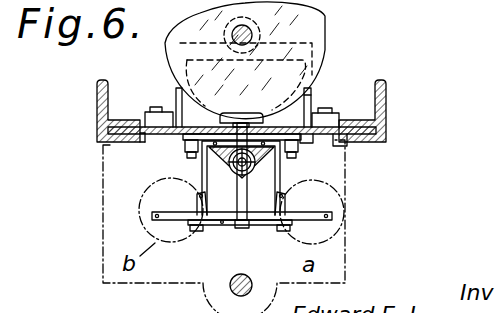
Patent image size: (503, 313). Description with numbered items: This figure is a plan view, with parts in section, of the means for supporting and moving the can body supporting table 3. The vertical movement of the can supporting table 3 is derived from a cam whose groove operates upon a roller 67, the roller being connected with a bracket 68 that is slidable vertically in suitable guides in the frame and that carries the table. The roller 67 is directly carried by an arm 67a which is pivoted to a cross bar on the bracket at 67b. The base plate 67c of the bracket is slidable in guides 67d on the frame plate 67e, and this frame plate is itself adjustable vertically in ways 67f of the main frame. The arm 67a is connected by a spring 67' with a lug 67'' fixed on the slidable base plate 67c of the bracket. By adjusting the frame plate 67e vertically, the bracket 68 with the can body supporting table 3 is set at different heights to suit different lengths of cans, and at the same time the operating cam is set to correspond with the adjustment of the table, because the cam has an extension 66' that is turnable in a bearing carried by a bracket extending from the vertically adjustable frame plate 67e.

The extension of the cam 66' is at (271, 60).
The roller 67 is at (242, 96).
The spring 67' is at (194, 197).
The lug 67'' is at (300, 185).
The arm 67a is at (230, 170).
The pivot on cross bar 67b is at (223, 226).
The base plate of the bracket 67c is at (187, 141).
The guides 67d is at (303, 147).
The frame plate 67e is at (294, 122).
The ways of the main frame 67f is at (386, 130).
The bracket 68 is at (241, 178).
The can supporting table 3 is at (346, 238).